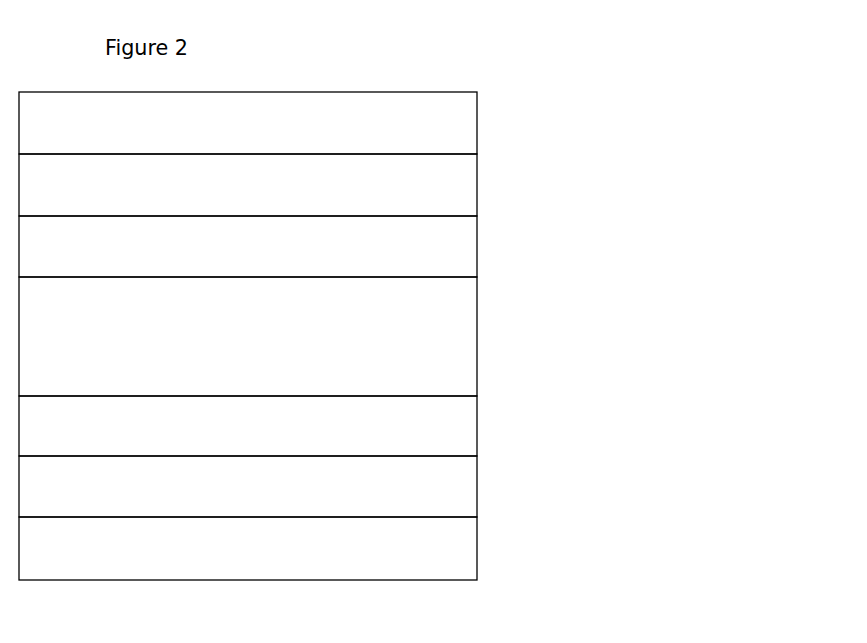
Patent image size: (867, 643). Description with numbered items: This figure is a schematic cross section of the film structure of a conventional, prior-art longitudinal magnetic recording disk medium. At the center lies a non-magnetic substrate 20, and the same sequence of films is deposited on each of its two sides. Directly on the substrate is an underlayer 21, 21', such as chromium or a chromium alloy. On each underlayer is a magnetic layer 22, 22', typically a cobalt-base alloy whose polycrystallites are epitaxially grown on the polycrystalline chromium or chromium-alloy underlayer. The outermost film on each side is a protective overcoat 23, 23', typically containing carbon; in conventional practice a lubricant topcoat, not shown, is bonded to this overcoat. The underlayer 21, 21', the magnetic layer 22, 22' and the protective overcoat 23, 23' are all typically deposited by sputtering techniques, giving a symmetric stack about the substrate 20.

The protective overcoat 23 is at (416, 123).
The magnetic layer 22 is at (396, 185).
The underlayer 21 is at (377, 246).
The non-magnetic substrate 20 is at (568, 355).
The underlayer 21' is at (380, 426).
The magnetic layer 22' is at (400, 486).
The protective overcoat 23' is at (420, 548).